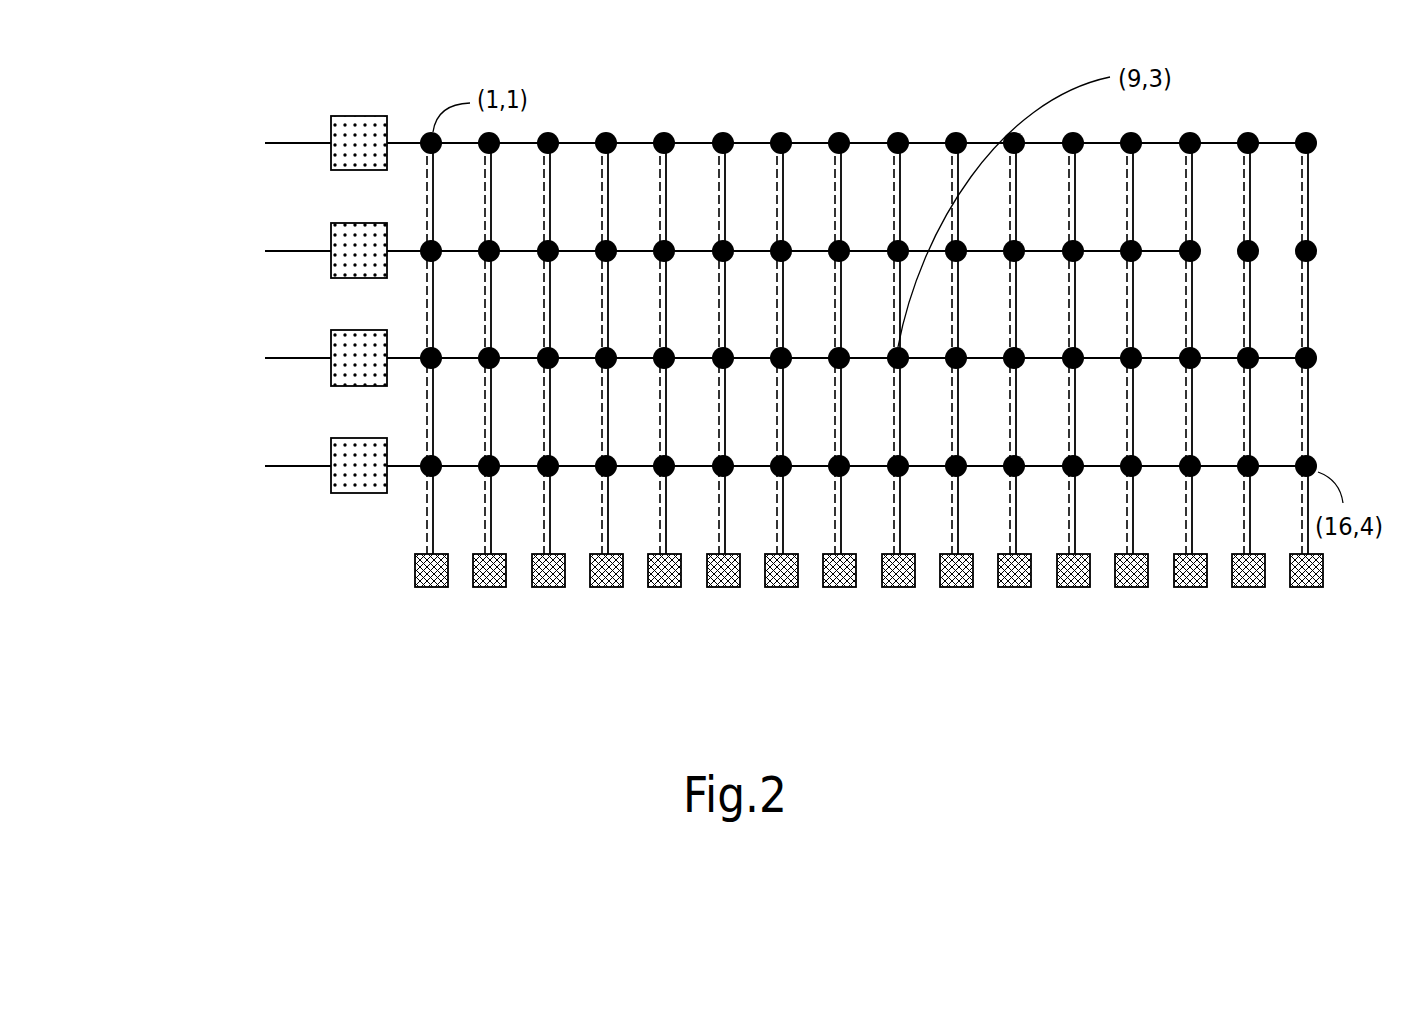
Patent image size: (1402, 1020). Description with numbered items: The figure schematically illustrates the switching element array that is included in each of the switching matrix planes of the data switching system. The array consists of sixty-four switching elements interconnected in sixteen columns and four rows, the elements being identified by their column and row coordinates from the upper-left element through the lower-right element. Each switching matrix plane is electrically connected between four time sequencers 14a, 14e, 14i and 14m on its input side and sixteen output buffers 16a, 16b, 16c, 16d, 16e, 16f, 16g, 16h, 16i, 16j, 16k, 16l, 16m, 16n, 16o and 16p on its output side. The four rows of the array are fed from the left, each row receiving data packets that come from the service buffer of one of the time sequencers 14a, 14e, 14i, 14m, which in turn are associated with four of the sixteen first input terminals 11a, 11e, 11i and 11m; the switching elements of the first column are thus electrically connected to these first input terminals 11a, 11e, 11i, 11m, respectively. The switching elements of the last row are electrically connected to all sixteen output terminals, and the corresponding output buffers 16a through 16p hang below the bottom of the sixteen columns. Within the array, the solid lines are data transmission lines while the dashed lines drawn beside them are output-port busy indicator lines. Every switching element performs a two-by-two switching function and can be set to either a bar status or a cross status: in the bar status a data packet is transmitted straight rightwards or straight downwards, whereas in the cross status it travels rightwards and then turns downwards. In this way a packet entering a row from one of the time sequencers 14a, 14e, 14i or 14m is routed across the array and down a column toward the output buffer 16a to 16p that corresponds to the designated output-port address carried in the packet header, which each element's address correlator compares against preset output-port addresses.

The first input terminal 11a is at (201, 142).
The first input terminal 11e is at (201, 248).
The first input terminal 11i is at (201, 358).
The first input terminal 11m is at (196, 464).
The time sequencer 14a is at (362, 125).
The time sequencer 14e is at (362, 235).
The time sequencer 14i is at (361, 340).
The time sequencer 14m is at (361, 452).
The output buffer 16a is at (431, 592).
The output buffer 16b is at (488, 592).
The output buffer 16c is at (547, 592).
The output buffer 16d is at (605, 592).
The output buffer 16e is at (664, 592).
The output buffer 16f is at (723, 592).
The output buffer 16g is at (780, 592).
The output buffer 16h is at (838, 592).
The output buffer 16i is at (897, 592).
The output buffer 16j is at (955, 592).
The output buffer 16k is at (1014, 592).
The output buffer 16l is at (1072, 592).
The output buffer 16m is at (1131, 592).
The output buffer 16n is at (1189, 592).
The output buffer 16o is at (1248, 592).
The output buffer 16p is at (1305, 592).